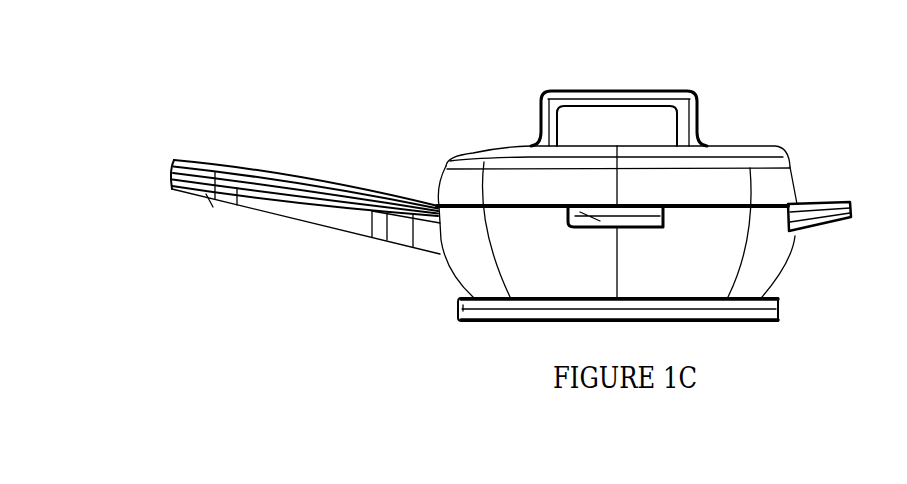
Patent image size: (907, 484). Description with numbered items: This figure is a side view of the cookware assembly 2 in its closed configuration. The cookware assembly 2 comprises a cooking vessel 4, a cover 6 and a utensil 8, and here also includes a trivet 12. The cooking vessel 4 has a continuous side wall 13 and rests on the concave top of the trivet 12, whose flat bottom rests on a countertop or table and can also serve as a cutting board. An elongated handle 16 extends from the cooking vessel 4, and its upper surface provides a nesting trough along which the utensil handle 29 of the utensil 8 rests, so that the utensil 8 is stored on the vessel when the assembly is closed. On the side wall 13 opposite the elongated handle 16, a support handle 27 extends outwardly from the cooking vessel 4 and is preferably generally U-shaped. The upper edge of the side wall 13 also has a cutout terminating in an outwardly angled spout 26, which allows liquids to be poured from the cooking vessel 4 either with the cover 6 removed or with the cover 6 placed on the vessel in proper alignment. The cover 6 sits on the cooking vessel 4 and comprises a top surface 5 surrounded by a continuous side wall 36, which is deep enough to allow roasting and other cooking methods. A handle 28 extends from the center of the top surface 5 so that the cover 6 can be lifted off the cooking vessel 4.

The cookware assembly 2 is at (495, 135).
The cooking vessel 4 is at (798, 252).
The top surface 5 is at (770, 152).
The cover 6 is at (735, 132).
The utensil 8 is at (330, 170).
The trivet 12 is at (446, 307).
The side wall 13 is at (780, 275).
The elongated handle 16 is at (262, 217).
The spout 26 is at (565, 205).
The support handle 27 is at (857, 195).
The handle 28 is at (620, 85).
The utensil handle 29 is at (253, 167).
The side wall 36 is at (785, 177).